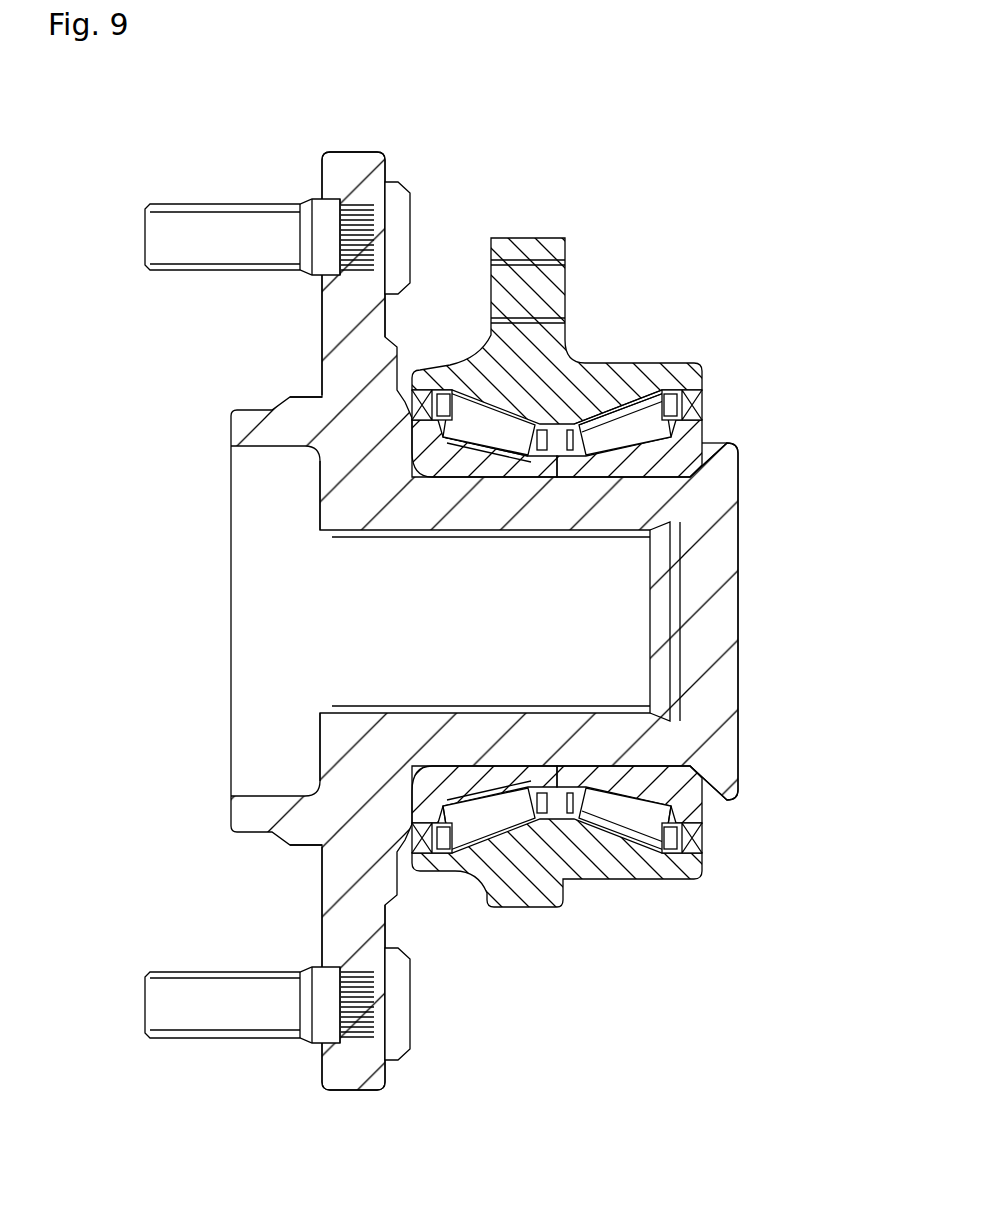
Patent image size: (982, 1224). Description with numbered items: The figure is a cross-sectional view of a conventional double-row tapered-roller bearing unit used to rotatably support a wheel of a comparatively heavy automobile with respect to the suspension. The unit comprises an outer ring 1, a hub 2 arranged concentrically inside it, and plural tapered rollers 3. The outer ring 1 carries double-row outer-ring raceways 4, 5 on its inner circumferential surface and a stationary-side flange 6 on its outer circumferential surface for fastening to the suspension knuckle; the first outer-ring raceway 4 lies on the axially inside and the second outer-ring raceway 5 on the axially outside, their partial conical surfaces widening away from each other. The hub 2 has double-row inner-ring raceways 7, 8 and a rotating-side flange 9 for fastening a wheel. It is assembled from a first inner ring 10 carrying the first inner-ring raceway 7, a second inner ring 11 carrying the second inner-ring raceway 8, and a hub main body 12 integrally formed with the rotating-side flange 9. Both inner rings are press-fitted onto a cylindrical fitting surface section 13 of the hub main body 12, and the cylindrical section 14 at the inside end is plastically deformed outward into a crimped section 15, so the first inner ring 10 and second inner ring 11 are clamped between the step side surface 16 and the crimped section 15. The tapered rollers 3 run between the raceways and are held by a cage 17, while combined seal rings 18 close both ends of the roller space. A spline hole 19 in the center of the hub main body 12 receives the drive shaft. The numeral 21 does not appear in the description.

The outer ring 1 is at (607, 362).
The hub 2 is at (229, 426).
The tapered rollers 3 is at (498, 424).
The first outer-ring raceway 4 is at (600, 875).
The second outer-ring raceway 5 is at (487, 860).
The stationary-side flange 6 is at (524, 250).
The first inner-ring raceway 7 is at (600, 810).
The second inner-ring raceway 8 is at (470, 810).
The rotating-side flange 9 is at (356, 175).
The first inner ring 10 is at (640, 466).
The second inner ring 11 is at (483, 462).
The hub main body 12 is at (298, 388).
The fitting surface section 13 is at (690, 436).
The cylindrical section 14 is at (700, 492).
The crimped section 15 is at (720, 465).
The step side surface 16 is at (427, 480).
The cage 17 is at (432, 854).
The combined seal rings 18 is at (418, 400).
The spline hole 19 is at (403, 703).
The cage 21 is at (658, 410).